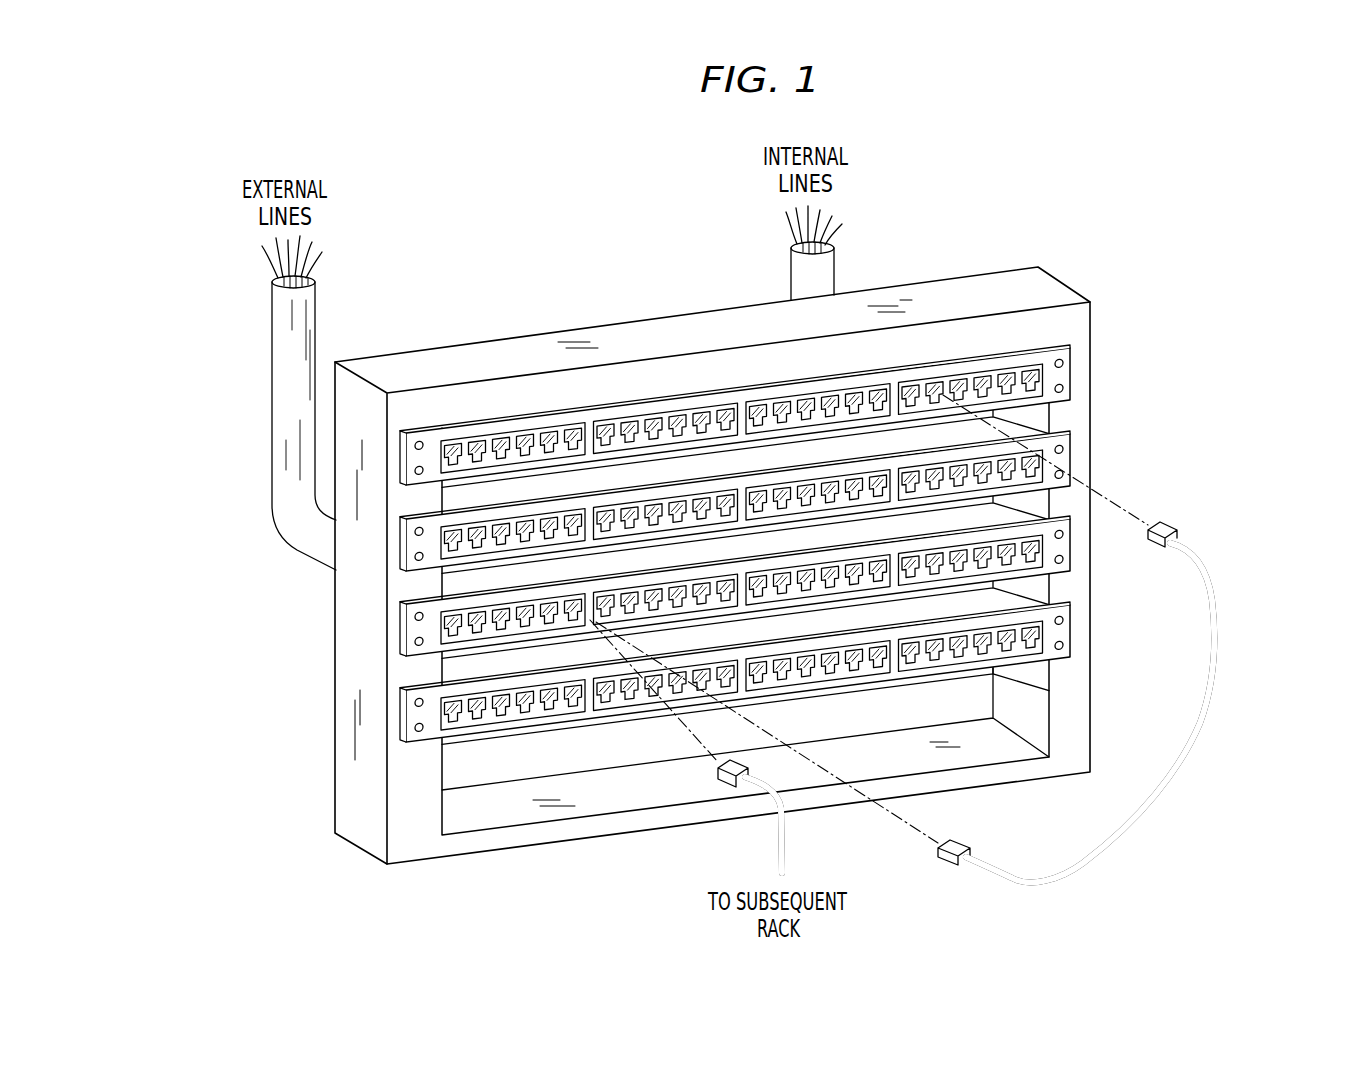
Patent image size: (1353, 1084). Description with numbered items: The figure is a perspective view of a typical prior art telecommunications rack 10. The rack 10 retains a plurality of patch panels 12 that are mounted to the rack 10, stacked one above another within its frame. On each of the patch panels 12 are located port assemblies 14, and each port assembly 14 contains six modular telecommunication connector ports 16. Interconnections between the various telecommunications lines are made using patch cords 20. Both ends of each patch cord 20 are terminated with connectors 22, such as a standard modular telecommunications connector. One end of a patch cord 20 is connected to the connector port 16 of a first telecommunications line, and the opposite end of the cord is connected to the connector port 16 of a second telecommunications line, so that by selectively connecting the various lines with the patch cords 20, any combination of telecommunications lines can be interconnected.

The rack 10 is at (958, 300).
The patch panels 12 is at (780, 517).
The port assemblies 14 is at (768, 393).
The RJ-45 telecommunication connector ports 16 is at (548, 443).
The patch cords 20 is at (1200, 725).
The connectors 22 is at (1178, 526).